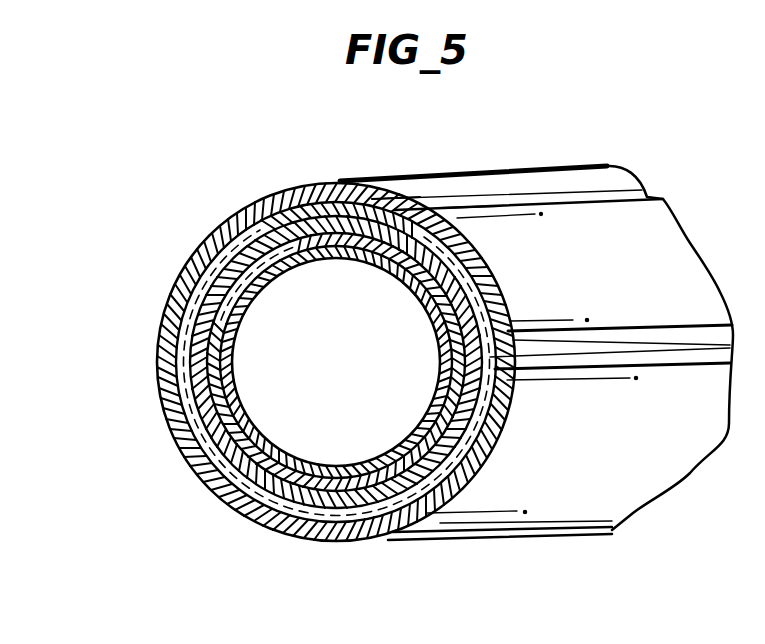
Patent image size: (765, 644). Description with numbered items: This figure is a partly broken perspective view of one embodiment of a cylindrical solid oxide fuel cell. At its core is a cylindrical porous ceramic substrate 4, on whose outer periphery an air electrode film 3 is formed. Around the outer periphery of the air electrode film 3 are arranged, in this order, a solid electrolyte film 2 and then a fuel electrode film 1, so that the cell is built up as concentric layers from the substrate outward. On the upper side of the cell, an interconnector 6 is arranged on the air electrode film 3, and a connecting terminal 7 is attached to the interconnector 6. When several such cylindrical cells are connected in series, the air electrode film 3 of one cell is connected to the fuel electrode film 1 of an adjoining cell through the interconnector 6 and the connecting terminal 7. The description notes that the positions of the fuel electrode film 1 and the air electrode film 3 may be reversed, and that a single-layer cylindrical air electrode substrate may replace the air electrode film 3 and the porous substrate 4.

The fuel electrode film 1 is at (242, 210).
The solid electrolyte film 2 is at (177, 362).
The air electrode film 3 is at (195, 460).
The cylindrical porous ceramic substrate 4 is at (322, 492).
The interconnector 6 is at (404, 226).
The connecting terminal 7 is at (468, 223).